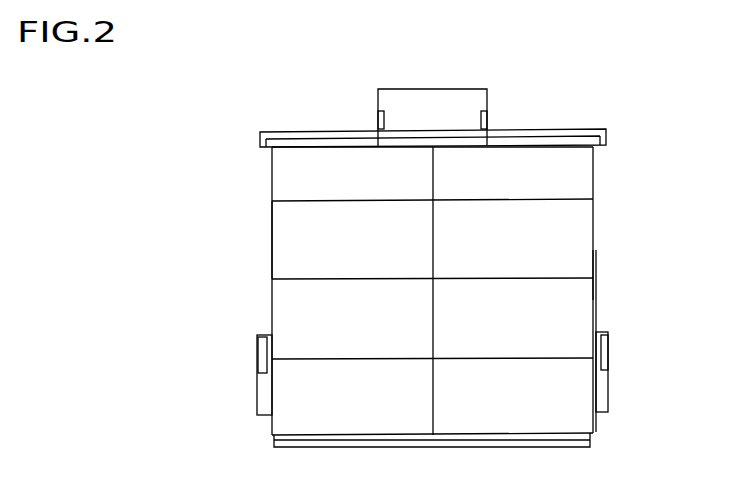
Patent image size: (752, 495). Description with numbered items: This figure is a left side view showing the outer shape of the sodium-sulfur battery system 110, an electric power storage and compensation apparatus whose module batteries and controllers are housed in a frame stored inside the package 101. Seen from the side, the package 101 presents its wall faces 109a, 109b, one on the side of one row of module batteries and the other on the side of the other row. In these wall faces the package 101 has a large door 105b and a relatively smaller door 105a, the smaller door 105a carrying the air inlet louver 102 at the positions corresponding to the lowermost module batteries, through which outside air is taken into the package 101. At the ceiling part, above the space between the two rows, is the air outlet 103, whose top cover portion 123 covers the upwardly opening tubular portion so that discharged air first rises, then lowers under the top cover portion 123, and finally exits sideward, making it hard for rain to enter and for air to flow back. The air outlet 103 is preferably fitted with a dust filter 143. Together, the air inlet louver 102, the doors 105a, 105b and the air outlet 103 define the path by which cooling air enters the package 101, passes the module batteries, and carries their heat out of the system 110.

The sodium-sulfur battery system 110 is at (595, 108).
The top cover portion 123 is at (429, 98).
The air outlet 103 is at (378, 120).
The dust filter 143 is at (484, 120).
The package 101 is at (565, 226).
The wall face 109a is at (272, 173).
The wall face 109b is at (597, 172).
The door 105b is at (272, 230).
The door 105a is at (270, 432).
The air inlet louver 102 is at (258, 357).